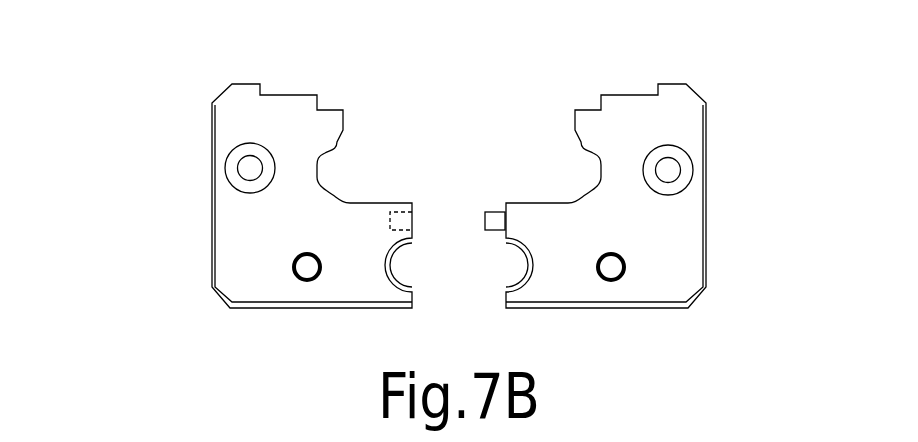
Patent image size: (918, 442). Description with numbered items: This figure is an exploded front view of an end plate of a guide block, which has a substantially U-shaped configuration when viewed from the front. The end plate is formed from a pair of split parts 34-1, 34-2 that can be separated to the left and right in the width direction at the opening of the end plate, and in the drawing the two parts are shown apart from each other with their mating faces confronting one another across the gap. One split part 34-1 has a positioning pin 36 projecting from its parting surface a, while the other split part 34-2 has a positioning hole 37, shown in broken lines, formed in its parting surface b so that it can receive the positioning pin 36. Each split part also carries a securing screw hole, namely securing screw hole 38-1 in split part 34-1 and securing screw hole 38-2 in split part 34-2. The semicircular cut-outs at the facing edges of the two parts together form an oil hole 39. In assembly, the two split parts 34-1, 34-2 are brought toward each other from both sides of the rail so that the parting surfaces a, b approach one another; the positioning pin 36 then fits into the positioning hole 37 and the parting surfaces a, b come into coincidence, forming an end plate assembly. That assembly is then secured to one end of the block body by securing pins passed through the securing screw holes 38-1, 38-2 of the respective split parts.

The split part 34-1 is at (578, 290).
The split part 34-2 is at (342, 290).
The positioning pin 36 is at (497, 214).
The positioning hole 37 is at (396, 213).
The securing screw hole 38-1 is at (668, 170).
The securing screw hole 38-2 is at (250, 168).
The oil hole 39 is at (518, 272).
The parting surface a is at (500, 237).
The parting surface b is at (416, 209).